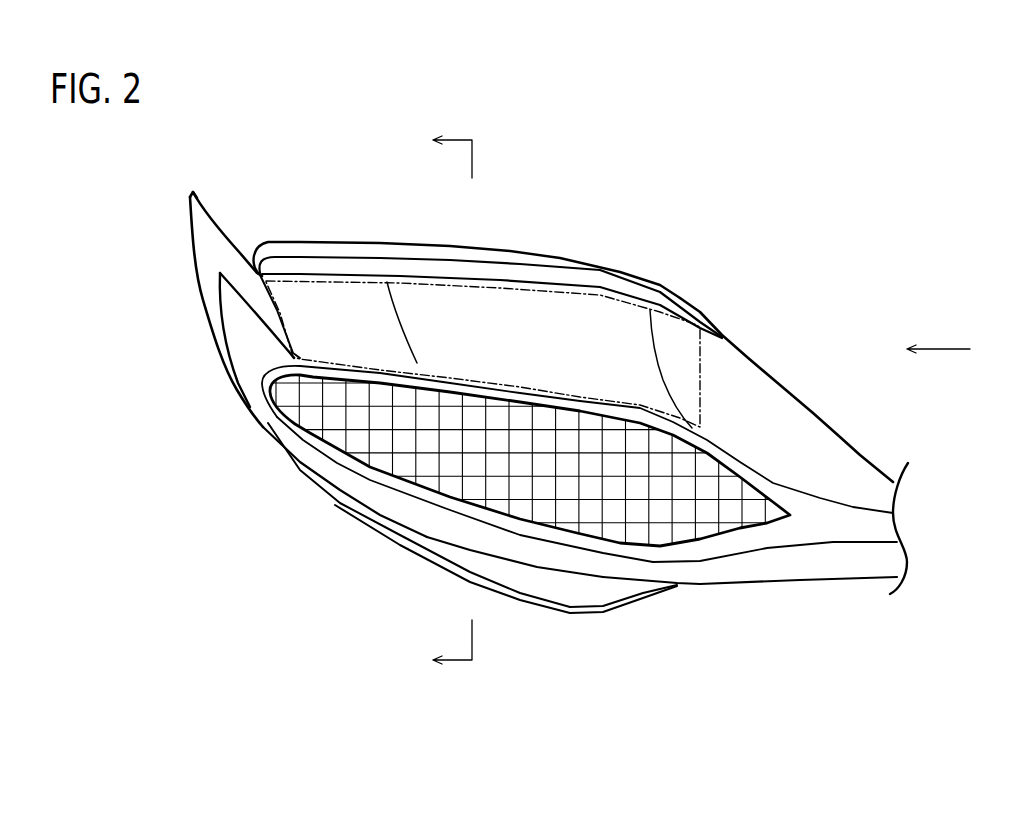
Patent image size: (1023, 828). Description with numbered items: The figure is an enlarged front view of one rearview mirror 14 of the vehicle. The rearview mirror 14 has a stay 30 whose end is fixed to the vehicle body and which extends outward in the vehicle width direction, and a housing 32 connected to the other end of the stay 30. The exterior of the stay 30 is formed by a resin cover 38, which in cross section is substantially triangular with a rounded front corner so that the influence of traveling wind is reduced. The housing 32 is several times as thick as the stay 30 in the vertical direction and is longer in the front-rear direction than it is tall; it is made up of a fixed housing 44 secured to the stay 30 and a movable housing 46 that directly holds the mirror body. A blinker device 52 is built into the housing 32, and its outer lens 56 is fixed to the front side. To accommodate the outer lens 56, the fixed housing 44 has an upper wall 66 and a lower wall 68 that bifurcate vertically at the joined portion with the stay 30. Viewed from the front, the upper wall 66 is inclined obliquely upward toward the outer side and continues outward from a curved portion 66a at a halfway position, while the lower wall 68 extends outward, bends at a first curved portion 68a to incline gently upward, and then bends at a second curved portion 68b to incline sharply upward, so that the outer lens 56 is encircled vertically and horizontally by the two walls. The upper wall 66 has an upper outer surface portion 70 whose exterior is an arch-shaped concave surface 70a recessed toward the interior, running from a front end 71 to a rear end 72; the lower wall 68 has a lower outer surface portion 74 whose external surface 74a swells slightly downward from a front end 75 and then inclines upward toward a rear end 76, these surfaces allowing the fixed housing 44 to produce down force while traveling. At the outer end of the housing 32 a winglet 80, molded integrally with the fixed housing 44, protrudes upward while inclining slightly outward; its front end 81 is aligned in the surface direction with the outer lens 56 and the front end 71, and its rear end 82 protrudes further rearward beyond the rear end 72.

The rearview mirror 14 is at (328, 110).
The stay 30 is at (883, 555).
The housing 32 is at (372, 173).
The resin cover 38 is at (870, 563).
The fixed housing 44 is at (357, 261).
The movable housing 46 is at (295, 226).
The blinker device 52 is at (490, 460).
The outer lens 56 is at (330, 441).
The upper wall 66 is at (797, 417).
The curved portion 66a is at (670, 330).
The lower wall 68 is at (580, 533).
The first curved portion 68a is at (653, 573).
The second curved portion 68b is at (352, 493).
The upper outer surface portion 70 is at (550, 351).
The concave surface 70a is at (700, 367).
The front end 71 is at (467, 377).
The rear end 72 is at (418, 273).
The lower outer surface portion 74 is at (419, 515).
The external surface 74a is at (407, 520).
The front end 75 is at (577, 538).
The rear end 76 is at (432, 540).
The winglet 80 is at (214, 282).
The front end 81 is at (240, 310).
The rear end 82 is at (192, 192).